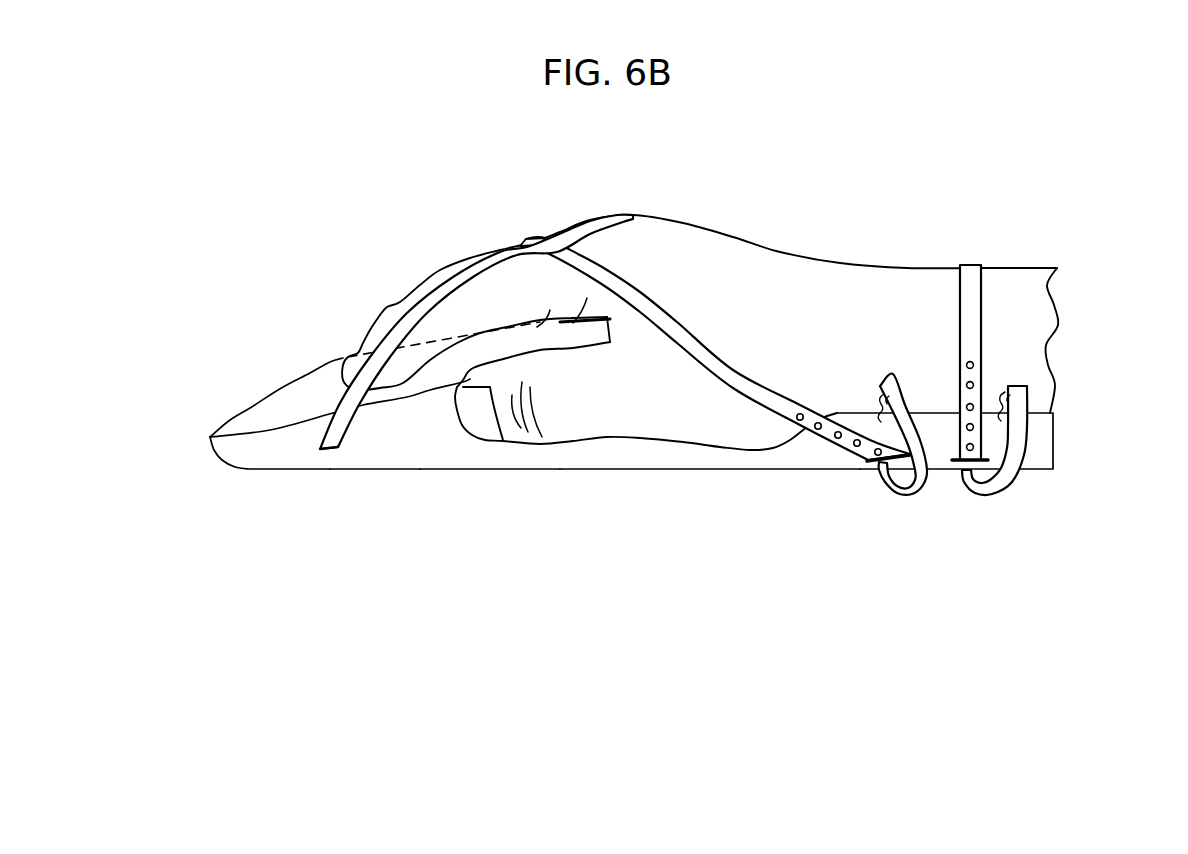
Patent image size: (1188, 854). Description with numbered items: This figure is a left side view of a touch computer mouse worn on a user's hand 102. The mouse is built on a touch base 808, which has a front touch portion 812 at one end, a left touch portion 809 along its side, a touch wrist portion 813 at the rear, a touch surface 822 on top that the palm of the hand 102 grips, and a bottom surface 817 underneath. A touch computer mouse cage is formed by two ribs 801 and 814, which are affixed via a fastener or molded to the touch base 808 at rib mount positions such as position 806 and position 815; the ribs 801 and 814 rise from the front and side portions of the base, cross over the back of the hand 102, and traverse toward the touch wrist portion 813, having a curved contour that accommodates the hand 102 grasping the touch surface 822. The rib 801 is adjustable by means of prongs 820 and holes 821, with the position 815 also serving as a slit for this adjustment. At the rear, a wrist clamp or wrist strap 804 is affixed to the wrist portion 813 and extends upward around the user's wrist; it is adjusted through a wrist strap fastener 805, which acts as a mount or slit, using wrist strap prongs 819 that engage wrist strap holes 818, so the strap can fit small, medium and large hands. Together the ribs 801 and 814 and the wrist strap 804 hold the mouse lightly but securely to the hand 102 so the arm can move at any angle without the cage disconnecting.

The user's hand 102 is at (807, 272).
The rib 801 is at (677, 325).
The wrist strap 804 is at (958, 297).
The wrist strap fastener 805 is at (955, 463).
The rib mount position 806 is at (328, 452).
The touch base 808 is at (455, 458).
The left touch portion 809 is at (393, 452).
The front touch portion 812 is at (207, 436).
The touch wrist portion 813 is at (1055, 445).
The rib 814 is at (565, 228).
The rib mount position 815 is at (872, 463).
The bottom surface 817 is at (612, 470).
The wrist strap holes 818 is at (973, 358).
The wrist strap prongs 819 is at (1008, 380).
The rib prongs 820 is at (878, 390).
The rib holes 821 is at (800, 412).
The touch surface 822 is at (280, 402).